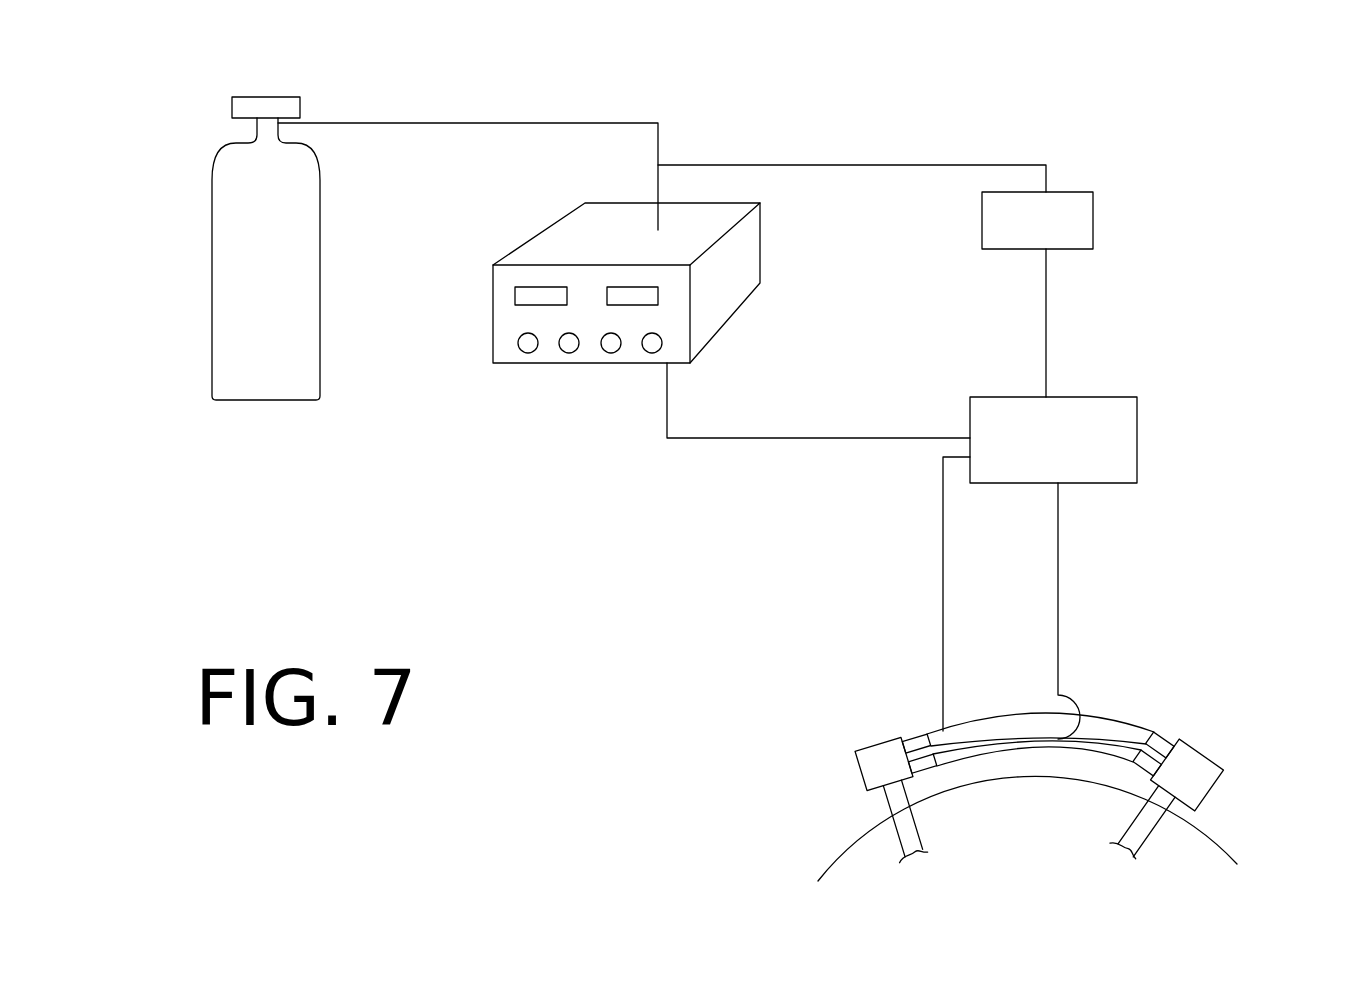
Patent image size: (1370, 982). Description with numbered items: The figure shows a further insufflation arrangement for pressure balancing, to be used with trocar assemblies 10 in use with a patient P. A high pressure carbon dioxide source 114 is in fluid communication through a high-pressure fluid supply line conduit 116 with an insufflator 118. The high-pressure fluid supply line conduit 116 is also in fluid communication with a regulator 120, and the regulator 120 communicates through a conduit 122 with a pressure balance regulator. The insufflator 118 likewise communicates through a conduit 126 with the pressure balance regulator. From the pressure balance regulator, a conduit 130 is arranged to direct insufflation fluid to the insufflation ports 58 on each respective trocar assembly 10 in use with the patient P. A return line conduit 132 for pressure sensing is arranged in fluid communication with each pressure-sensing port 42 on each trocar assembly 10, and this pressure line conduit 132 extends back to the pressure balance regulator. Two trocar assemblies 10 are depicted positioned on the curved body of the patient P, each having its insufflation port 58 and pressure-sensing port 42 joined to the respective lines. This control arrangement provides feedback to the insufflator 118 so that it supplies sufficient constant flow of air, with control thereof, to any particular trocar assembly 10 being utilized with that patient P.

The trocar assembly 10 is at (846, 772).
The pressure-sensing port 42 is at (920, 768).
The insufflation port 58 is at (921, 742).
The high pressure carbon dioxide source 114 is at (307, 250).
The high-pressure fluid supply line conduit 116 is at (518, 125).
The insufflator 118 is at (733, 270).
The regulator 120 is at (1093, 212).
The conduit 122 is at (1137, 430).
The conduit 126 is at (748, 440).
The conduit 130 is at (943, 628).
The return line conduit 132 is at (1060, 580).
The patient P is at (1213, 860).